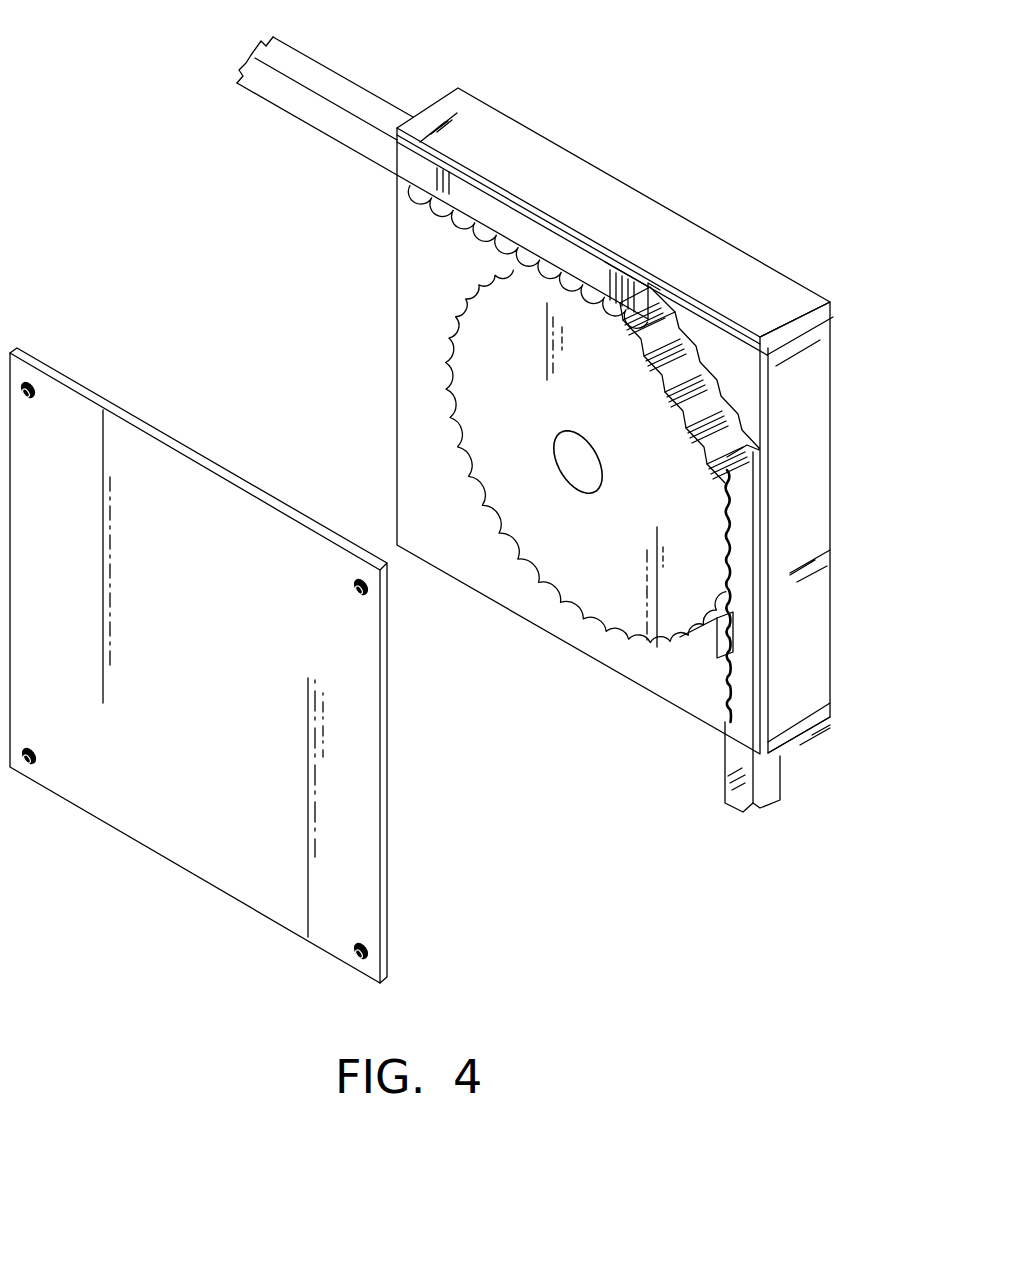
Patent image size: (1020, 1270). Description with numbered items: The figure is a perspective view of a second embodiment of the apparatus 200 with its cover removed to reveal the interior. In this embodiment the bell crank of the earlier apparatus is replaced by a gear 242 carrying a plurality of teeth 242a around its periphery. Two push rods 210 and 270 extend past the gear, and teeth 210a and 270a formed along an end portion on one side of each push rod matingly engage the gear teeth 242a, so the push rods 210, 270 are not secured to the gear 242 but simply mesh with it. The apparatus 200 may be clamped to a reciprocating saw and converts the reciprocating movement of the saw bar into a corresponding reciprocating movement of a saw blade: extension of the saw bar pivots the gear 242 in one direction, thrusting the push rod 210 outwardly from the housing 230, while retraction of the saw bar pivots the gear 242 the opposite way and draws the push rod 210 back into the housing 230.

The apparatus 200 is at (718, 212).
The push rod 210 is at (767, 782).
The teeth 210a is at (723, 542).
The housing 230 is at (396, 353).
The gear 242 is at (497, 437).
The teeth 242a is at (615, 636).
The push rod 270 is at (307, 77).
The teeth 270a is at (512, 248).